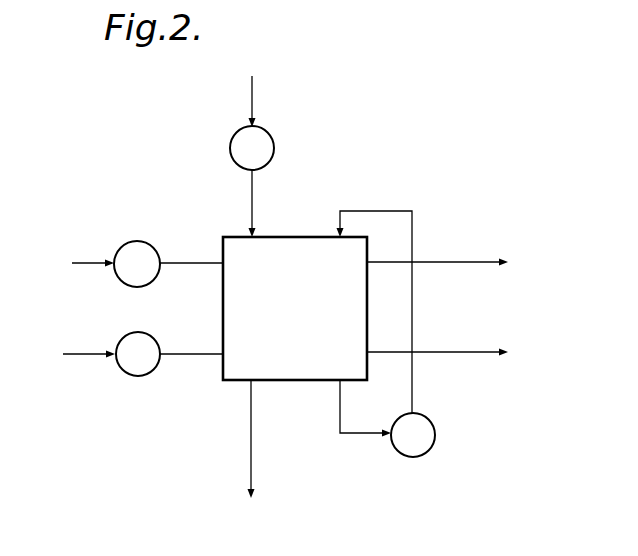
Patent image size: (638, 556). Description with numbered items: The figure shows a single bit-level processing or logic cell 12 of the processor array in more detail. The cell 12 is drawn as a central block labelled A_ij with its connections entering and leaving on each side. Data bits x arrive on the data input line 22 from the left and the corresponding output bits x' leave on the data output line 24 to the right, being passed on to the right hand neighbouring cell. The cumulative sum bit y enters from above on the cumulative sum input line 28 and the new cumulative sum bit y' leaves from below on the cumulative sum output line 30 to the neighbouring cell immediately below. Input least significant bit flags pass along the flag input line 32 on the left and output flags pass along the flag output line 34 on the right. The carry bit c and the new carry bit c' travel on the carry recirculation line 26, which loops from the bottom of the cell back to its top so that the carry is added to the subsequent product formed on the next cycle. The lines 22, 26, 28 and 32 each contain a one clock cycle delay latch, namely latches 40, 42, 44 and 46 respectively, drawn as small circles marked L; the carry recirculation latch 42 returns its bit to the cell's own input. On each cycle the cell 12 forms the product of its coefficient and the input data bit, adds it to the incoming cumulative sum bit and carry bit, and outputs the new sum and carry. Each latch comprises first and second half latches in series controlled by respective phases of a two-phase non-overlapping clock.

The processing cell 12 is at (229, 388).
The data input line 22 is at (70, 356).
The data output line 24 is at (463, 353).
The carry recirculation line 26 is at (413, 222).
The cumulative sum input line 28 is at (250, 96).
The cumulative sum output line 30 is at (253, 452).
The flag input line 32 is at (88, 262).
The flag output line 34 is at (467, 262).
The delay latch 40 is at (144, 333).
The carry recirculation latch 42 is at (422, 448).
The delay latch 44 is at (236, 146).
The delay latch 46 is at (135, 241).